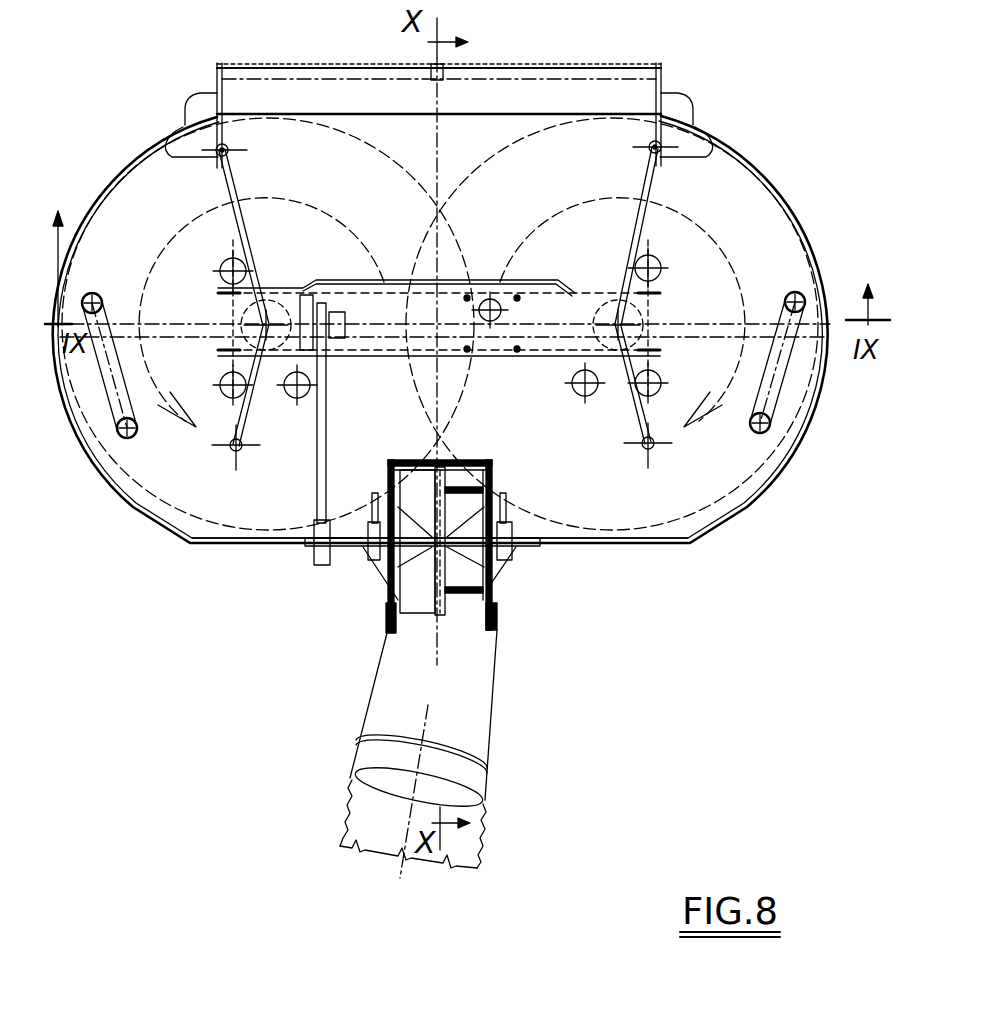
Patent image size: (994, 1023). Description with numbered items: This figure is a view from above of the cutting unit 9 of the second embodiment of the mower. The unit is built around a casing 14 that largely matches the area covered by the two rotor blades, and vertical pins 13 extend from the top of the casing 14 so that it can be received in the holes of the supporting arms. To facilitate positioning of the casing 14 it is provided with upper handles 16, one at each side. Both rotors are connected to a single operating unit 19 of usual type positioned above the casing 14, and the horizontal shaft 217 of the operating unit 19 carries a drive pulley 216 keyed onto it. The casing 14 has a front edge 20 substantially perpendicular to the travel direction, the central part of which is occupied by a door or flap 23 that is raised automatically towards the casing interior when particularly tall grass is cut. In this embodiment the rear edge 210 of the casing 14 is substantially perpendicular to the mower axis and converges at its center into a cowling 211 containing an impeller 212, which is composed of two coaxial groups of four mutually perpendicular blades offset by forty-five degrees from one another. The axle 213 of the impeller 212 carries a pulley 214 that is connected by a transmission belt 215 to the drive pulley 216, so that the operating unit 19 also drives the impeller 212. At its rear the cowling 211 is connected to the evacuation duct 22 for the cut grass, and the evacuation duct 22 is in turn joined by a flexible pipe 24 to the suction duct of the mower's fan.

The mowing unit 9 is at (487, 318).
The vertical pins 13 is at (168, 150).
The casing 14 is at (823, 231).
The upper handles 16 is at (110, 390).
The operating unit 19 is at (373, 313).
The front edge 20 is at (441, 86).
The evacuation duct 22 is at (497, 690).
The door or flap 23 is at (530, 64).
The flexible pipe 24 is at (343, 800).
The rear edge 210 is at (284, 548).
The cowling 211 is at (388, 575).
The impeller 212 is at (473, 577).
The axle 213 is at (345, 528).
The pulley 214 is at (262, 541).
The transmission belt 215 is at (327, 397).
The drive pulley 216 is at (323, 300).
The horizontal shaft 217 is at (343, 322).